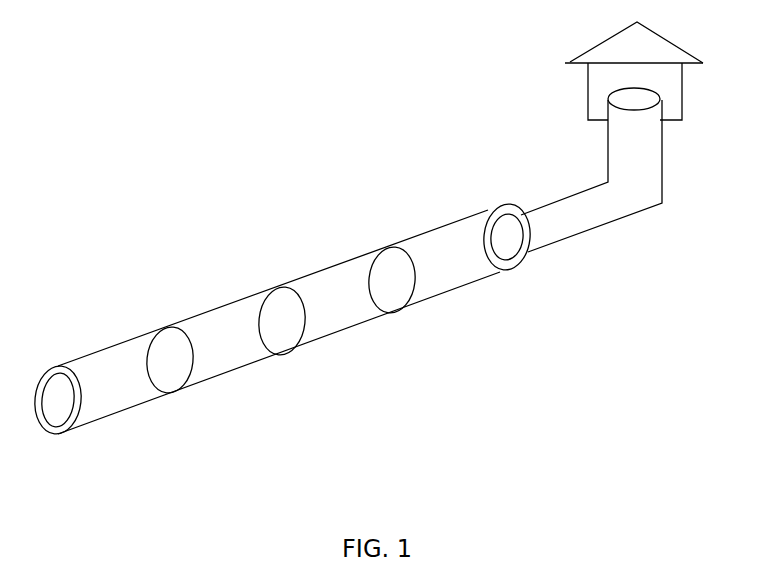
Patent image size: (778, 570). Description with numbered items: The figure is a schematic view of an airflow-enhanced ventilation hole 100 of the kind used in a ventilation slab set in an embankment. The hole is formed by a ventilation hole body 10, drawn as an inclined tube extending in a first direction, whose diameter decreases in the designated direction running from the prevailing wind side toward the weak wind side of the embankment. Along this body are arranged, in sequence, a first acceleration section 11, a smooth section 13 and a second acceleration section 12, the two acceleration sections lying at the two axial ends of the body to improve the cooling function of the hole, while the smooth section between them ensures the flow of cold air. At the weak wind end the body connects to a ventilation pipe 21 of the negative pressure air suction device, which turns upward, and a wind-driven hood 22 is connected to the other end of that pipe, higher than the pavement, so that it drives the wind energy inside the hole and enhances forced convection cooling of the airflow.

The airflow-enhanced ventilation hole 100 is at (283, 330).
The ventilation hole body 10 is at (152, 403).
The first acceleration section 11 is at (88, 356).
The second acceleration section 12 is at (331, 290).
The smooth section 13 is at (216, 328).
The ventilation pipe 21 is at (612, 219).
The wind-driven hood 22 is at (633, 33).